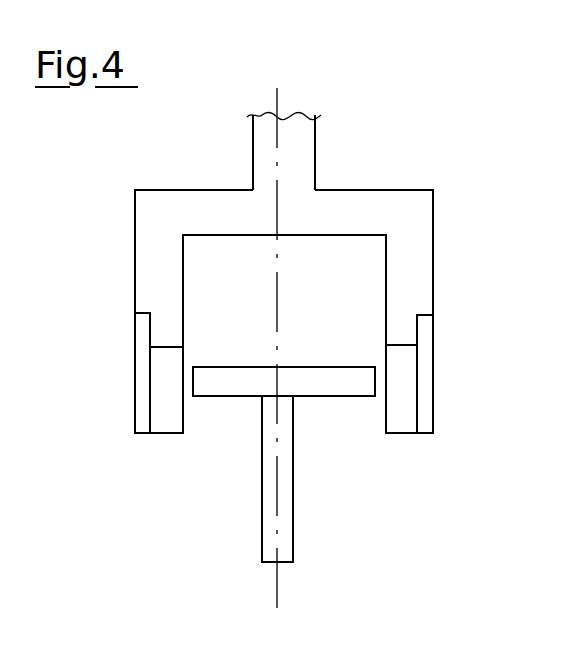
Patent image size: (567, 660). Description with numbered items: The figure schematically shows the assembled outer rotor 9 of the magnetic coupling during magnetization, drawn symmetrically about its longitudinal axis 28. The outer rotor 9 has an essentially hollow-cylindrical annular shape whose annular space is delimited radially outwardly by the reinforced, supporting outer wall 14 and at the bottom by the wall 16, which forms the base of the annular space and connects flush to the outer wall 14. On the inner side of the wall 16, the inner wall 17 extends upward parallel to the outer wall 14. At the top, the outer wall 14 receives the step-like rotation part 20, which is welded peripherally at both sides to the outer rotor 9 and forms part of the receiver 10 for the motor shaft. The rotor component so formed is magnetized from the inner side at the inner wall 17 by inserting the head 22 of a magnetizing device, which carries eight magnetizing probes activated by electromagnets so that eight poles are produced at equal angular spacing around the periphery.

The longitudinal axis 28 is at (277, 103).
The receiver 10 is at (303, 155).
The rotation part 20 is at (418, 268).
The outer rotor 9 is at (407, 372).
The outer wall 14 is at (425, 420).
The wall 16 is at (408, 437).
The inner wall 17 is at (383, 410).
The head 22 is at (242, 388).